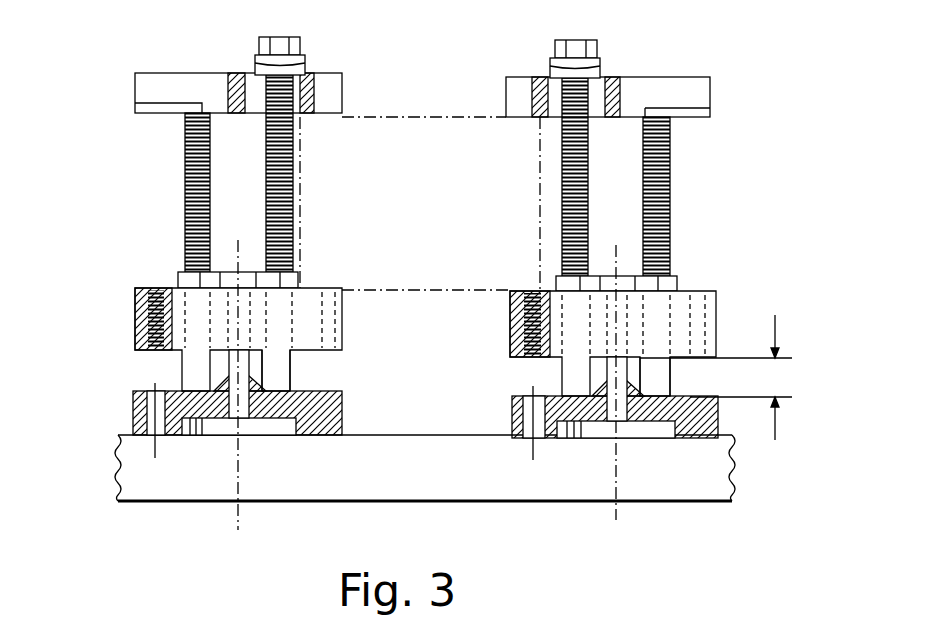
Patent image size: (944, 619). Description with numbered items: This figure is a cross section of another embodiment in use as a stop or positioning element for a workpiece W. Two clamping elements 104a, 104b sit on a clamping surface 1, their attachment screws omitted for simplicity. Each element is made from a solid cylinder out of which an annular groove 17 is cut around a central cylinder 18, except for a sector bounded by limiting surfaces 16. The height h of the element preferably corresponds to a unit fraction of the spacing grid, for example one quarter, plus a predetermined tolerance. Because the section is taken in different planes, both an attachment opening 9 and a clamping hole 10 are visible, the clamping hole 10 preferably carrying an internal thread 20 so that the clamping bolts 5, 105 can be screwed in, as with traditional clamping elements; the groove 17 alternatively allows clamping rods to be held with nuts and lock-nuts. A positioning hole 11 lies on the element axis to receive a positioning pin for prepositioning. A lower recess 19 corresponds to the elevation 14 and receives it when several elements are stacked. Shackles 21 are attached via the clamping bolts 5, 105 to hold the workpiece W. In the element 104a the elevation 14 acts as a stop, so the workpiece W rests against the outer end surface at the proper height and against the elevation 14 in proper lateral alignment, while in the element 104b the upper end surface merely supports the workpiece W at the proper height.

The clamping surface 1 is at (547, 497).
The clamping bolt 5 is at (266, 186).
The attachment opening 9 is at (152, 437).
The clamping hole 10 is at (155, 288).
The positioning hole 11 is at (232, 425).
The elevation 14 is at (178, 278).
The limiting surfaces 16 is at (590, 366).
The annular groove 17 is at (148, 375).
The central cylinder 18 is at (290, 383).
The lower recess 19 is at (270, 436).
The internal thread 20 is at (148, 356).
The shackle 21 is at (200, 90).
The clamping element 104a is at (115, 352).
The clamping element 104b is at (739, 287).
The clamping bolt 105 is at (186, 181).
The workpiece W is at (404, 112).
The height h is at (716, 377).